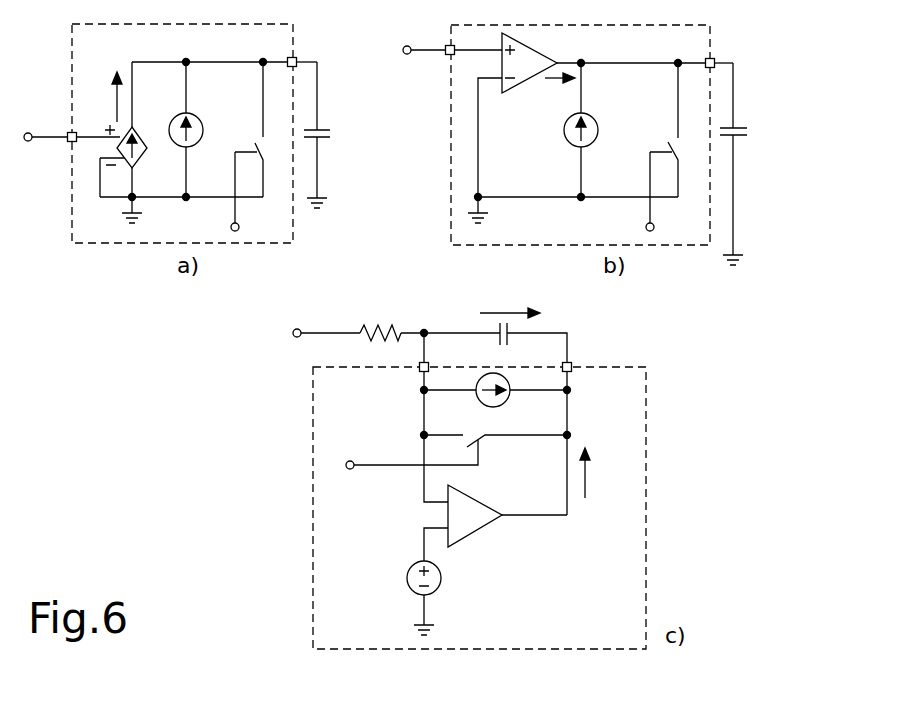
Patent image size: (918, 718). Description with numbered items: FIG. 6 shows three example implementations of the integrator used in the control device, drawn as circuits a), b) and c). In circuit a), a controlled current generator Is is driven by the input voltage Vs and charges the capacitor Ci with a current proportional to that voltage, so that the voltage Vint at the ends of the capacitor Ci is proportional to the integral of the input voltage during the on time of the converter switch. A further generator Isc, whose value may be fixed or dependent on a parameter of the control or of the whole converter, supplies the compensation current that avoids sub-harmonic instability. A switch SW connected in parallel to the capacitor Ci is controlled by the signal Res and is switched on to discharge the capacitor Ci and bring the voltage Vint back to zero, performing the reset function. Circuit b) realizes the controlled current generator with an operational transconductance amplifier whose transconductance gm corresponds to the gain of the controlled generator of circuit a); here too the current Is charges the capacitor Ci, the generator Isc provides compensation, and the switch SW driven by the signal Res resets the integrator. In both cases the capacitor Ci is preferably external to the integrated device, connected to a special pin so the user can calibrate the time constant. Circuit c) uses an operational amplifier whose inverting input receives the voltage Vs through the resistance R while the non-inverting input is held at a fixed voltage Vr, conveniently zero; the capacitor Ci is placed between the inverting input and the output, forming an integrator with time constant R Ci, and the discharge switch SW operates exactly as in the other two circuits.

The voltage Vs is at (239, 175).
The voltage Vint is at (525, 175).
The capacitor Ci is at (540, 213).
The generator Isc is at (371, 256).
The current generator Is is at (355, 285).
The switch SW is at (446, 266).
The signal Res is at (442, 310).
The transconductance gm is at (537, 58).
The resistance R is at (380, 319).
The fixed voltage Vr is at (410, 578).